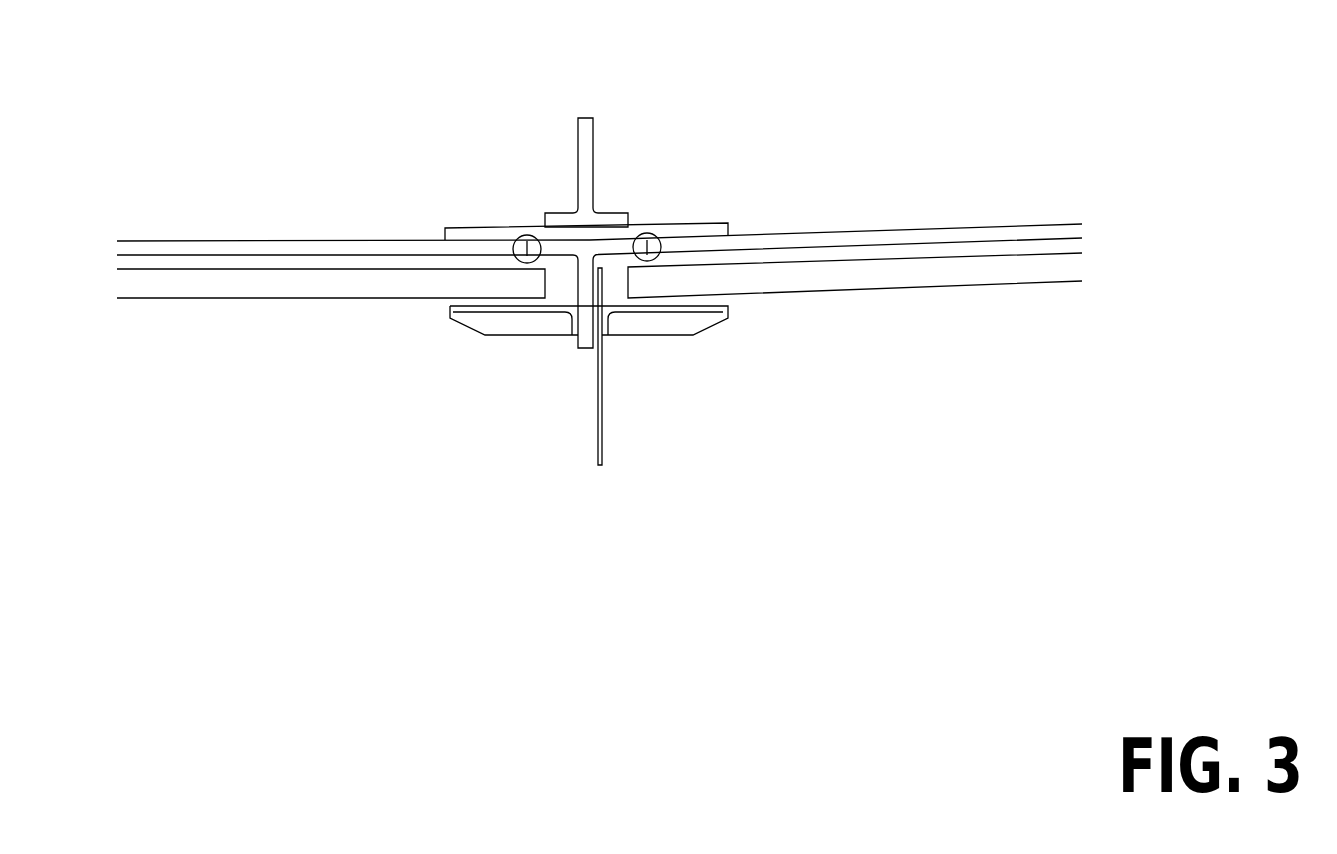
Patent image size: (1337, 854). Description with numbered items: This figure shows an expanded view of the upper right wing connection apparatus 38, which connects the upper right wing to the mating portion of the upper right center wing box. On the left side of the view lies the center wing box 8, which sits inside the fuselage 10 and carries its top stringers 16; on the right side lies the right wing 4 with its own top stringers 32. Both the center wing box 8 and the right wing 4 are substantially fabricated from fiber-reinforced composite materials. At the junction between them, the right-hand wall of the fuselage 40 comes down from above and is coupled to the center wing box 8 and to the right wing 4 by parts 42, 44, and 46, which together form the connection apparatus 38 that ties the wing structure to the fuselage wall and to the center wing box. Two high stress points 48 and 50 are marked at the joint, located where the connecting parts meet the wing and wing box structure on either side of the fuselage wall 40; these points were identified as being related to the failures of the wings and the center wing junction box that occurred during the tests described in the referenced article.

The fuselage 10 is at (310, 91).
The center wing box 8 is at (353, 337).
The right wing 4 is at (836, 351).
The top stringers 16 is at (331, 315).
The top stringers 32 is at (855, 307).
The right-hand wall of the fuselage 40 is at (594, 133).
The upper right wing connection apparatus 38 is at (688, 93).
The part 42 is at (615, 195).
The high stress point 48 is at (497, 220).
The high stress point 50 is at (674, 219).
The part 44 is at (557, 362).
The part 46 is at (589, 352).